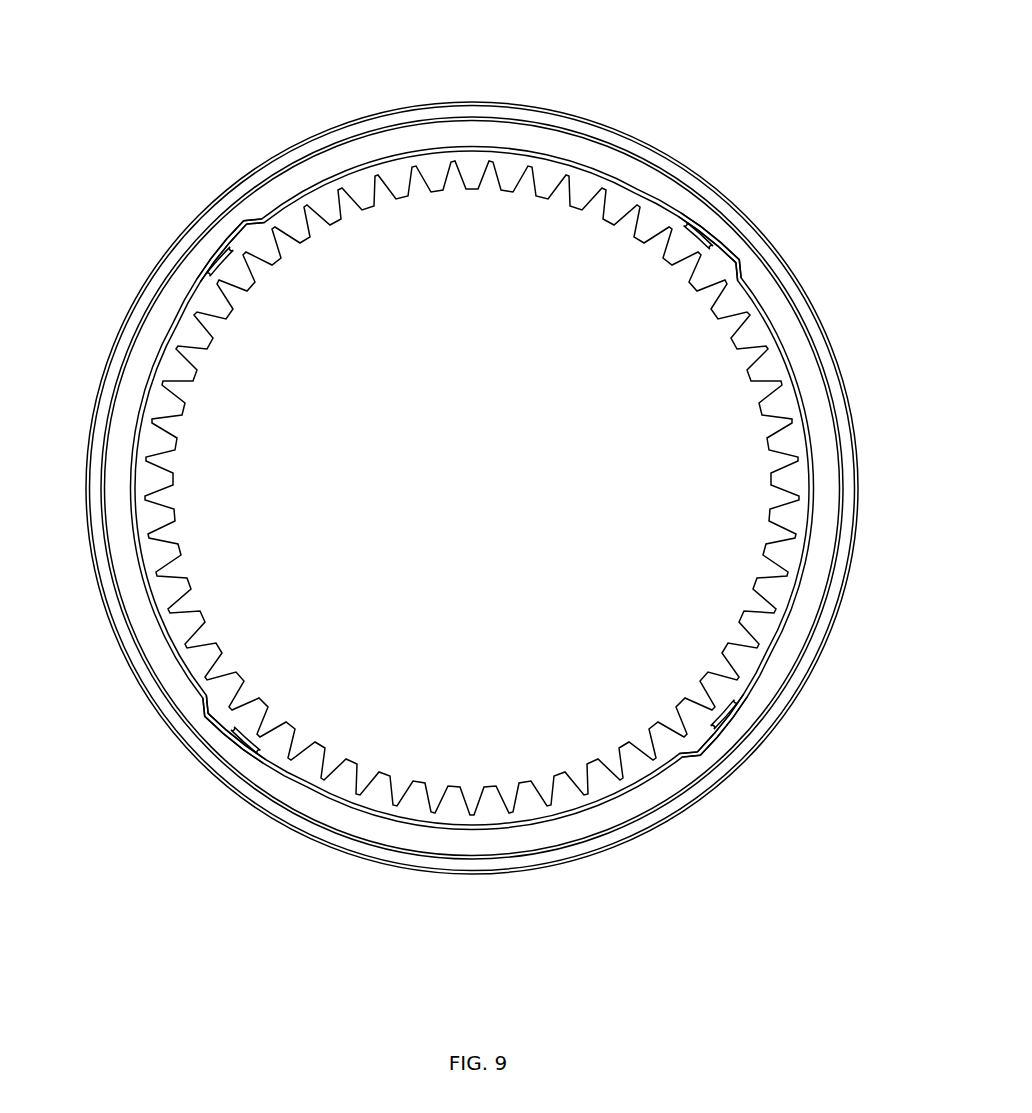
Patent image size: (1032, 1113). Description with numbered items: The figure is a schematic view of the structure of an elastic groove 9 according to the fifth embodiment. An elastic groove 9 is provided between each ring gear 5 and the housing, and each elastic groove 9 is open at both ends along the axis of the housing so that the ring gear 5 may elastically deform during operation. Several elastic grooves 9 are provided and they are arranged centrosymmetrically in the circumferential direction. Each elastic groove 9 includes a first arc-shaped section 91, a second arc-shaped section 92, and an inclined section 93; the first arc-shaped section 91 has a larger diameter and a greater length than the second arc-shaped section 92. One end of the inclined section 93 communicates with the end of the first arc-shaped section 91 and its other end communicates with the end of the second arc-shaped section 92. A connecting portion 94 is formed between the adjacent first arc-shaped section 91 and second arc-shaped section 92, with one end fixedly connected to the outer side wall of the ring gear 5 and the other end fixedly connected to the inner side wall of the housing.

The elastic groove 9 is at (703, 80).
The first arc-shaped section 91 is at (463, 140).
The second arc-shaped section 92 is at (226, 225).
The inclined section 93 is at (255, 220).
The connecting portion 94 is at (212, 254).
The ring gear 5 is at (148, 522).